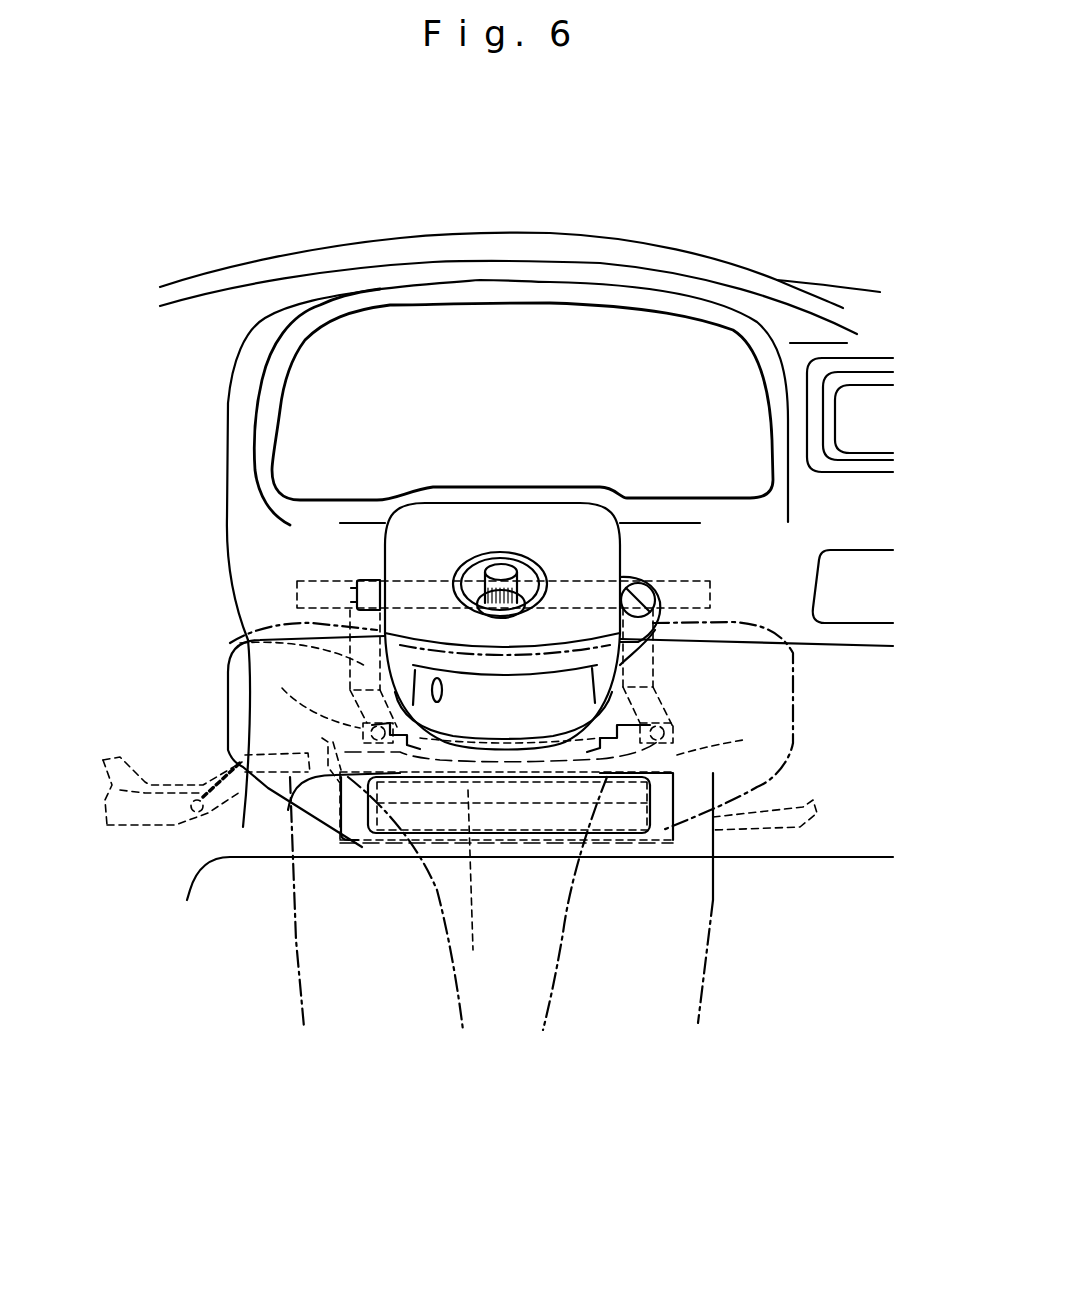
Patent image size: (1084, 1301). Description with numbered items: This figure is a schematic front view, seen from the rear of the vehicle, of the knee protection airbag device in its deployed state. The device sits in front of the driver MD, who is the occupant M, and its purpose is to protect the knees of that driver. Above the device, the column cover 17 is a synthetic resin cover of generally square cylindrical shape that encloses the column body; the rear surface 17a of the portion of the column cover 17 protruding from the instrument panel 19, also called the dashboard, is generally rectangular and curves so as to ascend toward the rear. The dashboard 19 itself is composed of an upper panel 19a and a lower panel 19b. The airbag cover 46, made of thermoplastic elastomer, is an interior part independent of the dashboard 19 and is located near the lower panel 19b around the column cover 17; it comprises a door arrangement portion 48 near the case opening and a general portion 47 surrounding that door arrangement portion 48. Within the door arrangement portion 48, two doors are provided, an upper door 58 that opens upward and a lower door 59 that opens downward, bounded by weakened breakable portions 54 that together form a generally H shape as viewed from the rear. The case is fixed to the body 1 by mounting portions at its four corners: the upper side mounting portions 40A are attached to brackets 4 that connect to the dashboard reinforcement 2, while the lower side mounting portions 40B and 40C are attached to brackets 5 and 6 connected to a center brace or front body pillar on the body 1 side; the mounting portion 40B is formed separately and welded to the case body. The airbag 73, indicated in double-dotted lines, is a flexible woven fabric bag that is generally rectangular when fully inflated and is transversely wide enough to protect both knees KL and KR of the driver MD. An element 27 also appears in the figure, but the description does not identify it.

The body 1 is at (526, 566).
The dashboard reinforcement 2 is at (683, 598).
The bracket 4 is at (320, 680).
The bracket 5 is at (140, 812).
The bracket 6 is at (800, 827).
The column cover 17 is at (527, 527).
The rear surface 17a is at (467, 687).
The instrument panel 19 is at (215, 465).
The upper panel 19a is at (268, 555).
The lower panel 19b is at (202, 735).
The reinforcement member 27 is at (710, 800).
The upper side mounting portion 40A is at (513, 681).
The lower side mounting portion 40B is at (232, 770).
The lower side mounting portion 40C is at (687, 840).
The airbag cover 46 is at (366, 838).
The general portion 47 is at (653, 843).
The door arrangement portion 48 is at (561, 850).
The weakened breakable portion 54 is at (420, 903).
The upper door 58 is at (533, 795).
The lower door 59 is at (513, 818).
The airbag 73 is at (793, 700).
The knee KL is at (430, 888).
The knee KR is at (573, 897).
The driver MD is at (298, 977).
The occupant M is at (296, 940).